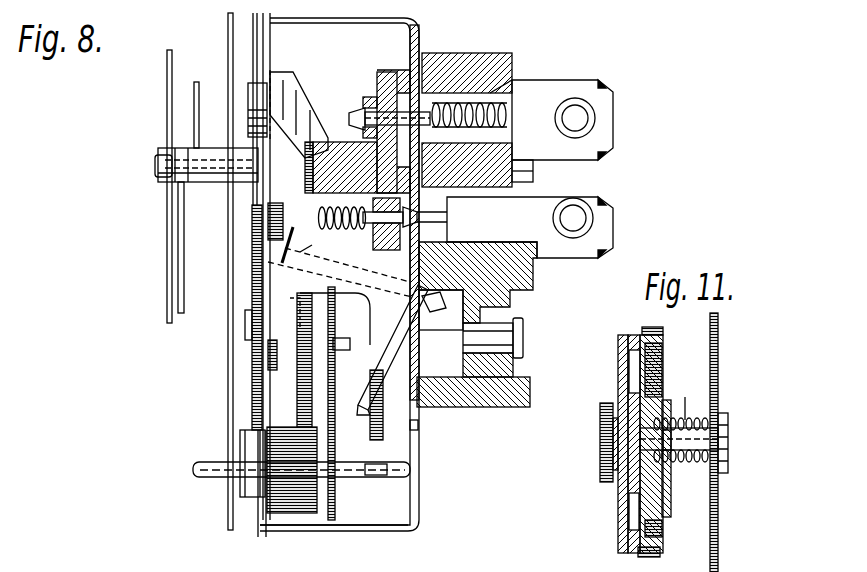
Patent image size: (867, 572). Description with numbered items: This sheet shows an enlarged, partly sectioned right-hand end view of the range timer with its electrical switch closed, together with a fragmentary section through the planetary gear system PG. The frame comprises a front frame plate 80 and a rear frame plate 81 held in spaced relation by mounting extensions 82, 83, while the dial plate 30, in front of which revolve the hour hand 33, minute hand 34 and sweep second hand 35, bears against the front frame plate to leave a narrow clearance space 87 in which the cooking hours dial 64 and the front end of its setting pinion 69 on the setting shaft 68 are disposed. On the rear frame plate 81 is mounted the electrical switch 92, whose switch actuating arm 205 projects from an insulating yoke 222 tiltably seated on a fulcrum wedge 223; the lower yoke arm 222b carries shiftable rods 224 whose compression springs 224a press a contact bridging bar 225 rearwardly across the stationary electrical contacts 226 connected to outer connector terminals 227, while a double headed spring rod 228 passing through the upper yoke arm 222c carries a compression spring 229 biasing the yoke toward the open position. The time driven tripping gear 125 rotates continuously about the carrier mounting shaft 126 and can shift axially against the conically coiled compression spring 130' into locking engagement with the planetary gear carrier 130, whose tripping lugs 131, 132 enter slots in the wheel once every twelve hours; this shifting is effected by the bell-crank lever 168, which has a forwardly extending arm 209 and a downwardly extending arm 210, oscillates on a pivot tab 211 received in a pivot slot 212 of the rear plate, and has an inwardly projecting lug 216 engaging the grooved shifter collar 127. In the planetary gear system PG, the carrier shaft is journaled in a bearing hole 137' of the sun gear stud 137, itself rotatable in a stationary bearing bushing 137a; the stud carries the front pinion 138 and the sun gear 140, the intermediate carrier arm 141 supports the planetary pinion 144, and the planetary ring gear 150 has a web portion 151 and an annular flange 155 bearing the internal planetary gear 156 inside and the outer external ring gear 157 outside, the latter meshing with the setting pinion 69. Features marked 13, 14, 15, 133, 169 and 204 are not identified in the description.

In FIG. 8, the direction arrow 13 is at (393, 40).
In FIG. 8, the direction arrow / frame plate 14 is at (288, 34).
In FIG. 8, the direction arrow 15 is at (292, 565).
In FIG. 8, the front face or dial plate 30 is at (228, 32).
In FIG. 8, the hour hand 33 is at (197, 82).
In FIG. 8, the minute hand 34 is at (178, 240).
In FIG. 8, the sweep second hand 35 is at (167, 103).
In FIG. 8, the cooking hours dial 64 is at (250, 397).
In FIG. 8, the setting shaft 68 is at (283, 466).
In FIG. 8, the setting pinion 69 is at (240, 444).
In FIG. 8, the front frame plate 80 is at (268, 70).
In FIG. 8, the rear frame plate 81 is at (430, 23).
In FIG. 8, the mounting extension 82 is at (364, 567).
In FIG. 8, the mounting extension 83 is at (385, 525).
In FIG. 8, the clearance space 87 is at (238, 372).
In FIG. 8, the electrical contact switch 92 is at (521, 49).
In FIG. 8, the time driven tripping gear 125 is at (335, 500).
In FIG. 11, the time driven tripping gear 125 is at (720, 331).
In FIG. 11, the planetary gear carrier mounting shaft 126 is at (687, 400).
In FIG. 8, the shifter collar 127 is at (392, 406).
In FIG. 8, the planetary gear carrier 130 is at (373, 350).
In FIG. 8, the conically coiled compression spring 130' is at (366, 453).
In FIG. 11, the conically coiled compression spring 130' is at (684, 480).
In FIG. 8, the tripping lug 131 is at (400, 462).
In FIG. 11, the tripping lug 131 is at (720, 425).
In FIG. 8, the tripping lug 132 is at (340, 345).
In FIG. 11, the nut 133 is at (728, 451).
In FIG. 11, the sun gear stud 137 is at (598, 442).
In FIG. 11, the bearing hole 137' is at (597, 391).
In FIG. 11, the stationary bearing bushing 137a is at (620, 487).
In FIG. 11, the front pinion 138 is at (612, 432).
In FIG. 11, the sun gear 140 is at (615, 462).
In FIG. 11, the intermediate carrier arm 141 is at (668, 519).
In FIG. 11, the planetary pinion 144 is at (665, 527).
In FIG. 11, the planetary ring gear 150 is at (660, 548).
In FIG. 11, the web portion 151 is at (640, 369).
In FIG. 11, the annular flange 155 is at (662, 348).
In FIG. 11, the internal planetary gear 156 is at (662, 362).
In FIG. 11, the outer external ring gear 157 is at (643, 330).
In FIG. 8, the bell-crank lever 168 is at (312, 262).
In FIG. 8, the bracket 169 is at (245, 326).
In FIG. 8, the pawl 204 is at (305, 118).
In FIG. 8, the switch actuating arm 205 is at (357, 131).
In FIG. 8, the forwardly extending arm 209 is at (331, 312).
In FIG. 8, the downwardly extending arm 210 is at (385, 362).
In FIG. 8, the pivot tab 211 is at (442, 310).
In FIG. 8, the pivot slot 212 is at (437, 322).
In FIG. 8, the inwardly projecting lug 216 is at (418, 426).
In FIG. 8, the insulating yoke 222 is at (467, 120).
In FIG. 8, the lower yoke arm 222b is at (521, 238).
In FIG. 8, the upper yoke arm 222c is at (370, 98).
In FIG. 8, the fulcrum wedge 223 is at (533, 172).
In FIG. 8, the shiftable rod 224 is at (423, 224).
In FIG. 8, the compression spring 224a is at (300, 210).
In FIG. 8, the contact bridging bar 225 is at (469, 238).
In FIG. 8, the stationary electrical contacts 226 is at (514, 209).
In FIG. 8, the outer connector terminals 227 is at (605, 205).
In FIG. 8, the double headed spring rod 228 is at (515, 80).
In FIG. 8, the compression spring 229 is at (490, 128).
In FIG. 11, the planetary gear system PG is at (667, 342).